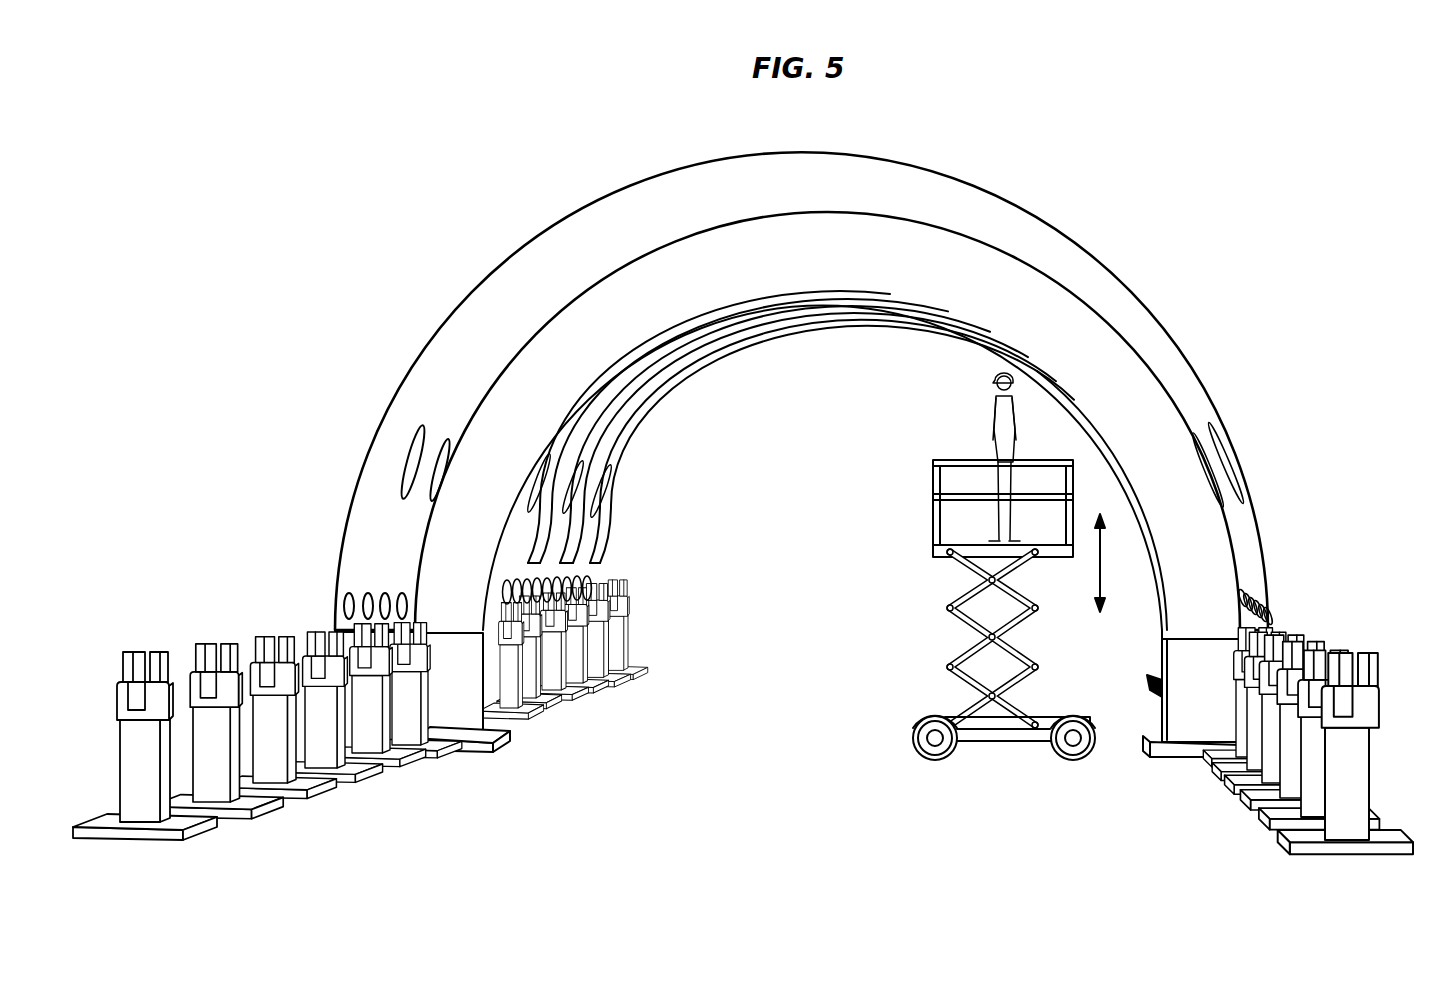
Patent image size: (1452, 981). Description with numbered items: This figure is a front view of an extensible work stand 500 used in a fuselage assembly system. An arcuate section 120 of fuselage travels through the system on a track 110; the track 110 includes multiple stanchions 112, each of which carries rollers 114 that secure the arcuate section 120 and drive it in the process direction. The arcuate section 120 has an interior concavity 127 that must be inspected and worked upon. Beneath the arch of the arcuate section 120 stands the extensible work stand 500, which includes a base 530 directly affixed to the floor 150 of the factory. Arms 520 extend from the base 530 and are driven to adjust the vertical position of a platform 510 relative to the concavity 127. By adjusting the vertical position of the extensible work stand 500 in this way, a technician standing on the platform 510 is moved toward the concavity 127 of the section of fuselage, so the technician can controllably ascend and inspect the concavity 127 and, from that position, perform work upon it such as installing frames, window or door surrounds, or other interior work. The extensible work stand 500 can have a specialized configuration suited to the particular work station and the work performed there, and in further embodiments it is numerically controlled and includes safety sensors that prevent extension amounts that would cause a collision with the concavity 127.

The track 110 is at (1327, 765).
The stanchion 112 is at (1400, 837).
The roller 114 is at (1370, 682).
The arcuate section 120 is at (995, 194).
The concavity 127 is at (632, 413).
The floor 150 is at (673, 493).
The extensible work stand 500 is at (955, 579).
The platform 510 is at (934, 517).
The arms 520 is at (955, 622).
The base 530 is at (998, 735).